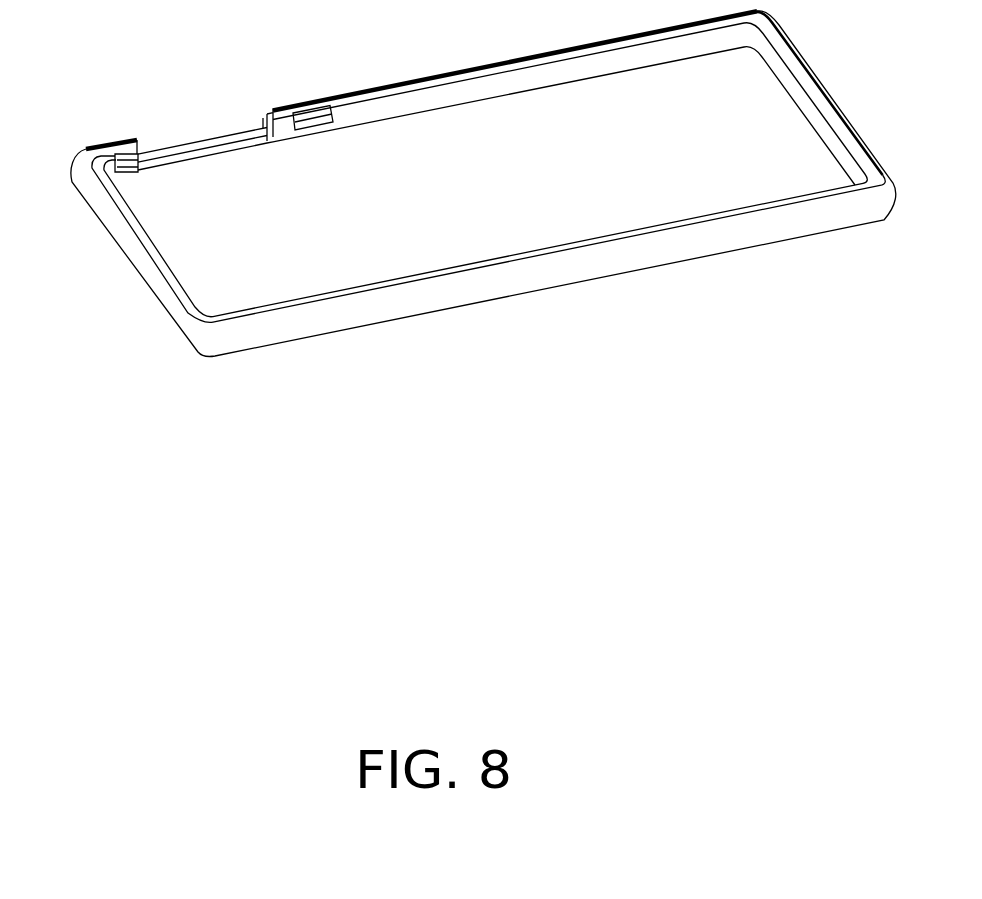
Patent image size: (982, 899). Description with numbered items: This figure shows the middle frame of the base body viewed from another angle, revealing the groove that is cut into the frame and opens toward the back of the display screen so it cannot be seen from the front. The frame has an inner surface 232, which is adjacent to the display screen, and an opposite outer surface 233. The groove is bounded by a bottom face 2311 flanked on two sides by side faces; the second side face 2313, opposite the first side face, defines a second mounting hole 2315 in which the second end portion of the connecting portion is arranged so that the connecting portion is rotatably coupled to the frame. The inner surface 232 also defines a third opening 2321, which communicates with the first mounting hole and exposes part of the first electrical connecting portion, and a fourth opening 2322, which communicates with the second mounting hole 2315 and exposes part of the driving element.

The outer surface 233 is at (680, 235).
The inner surface 232 is at (430, 102).
The bottom face 2311 is at (187, 152).
The second side face 2313 is at (269, 115).
The second mounting hole 2315 is at (264, 123).
The third opening 2321 is at (129, 171).
The fourth opening 2322 is at (318, 124).